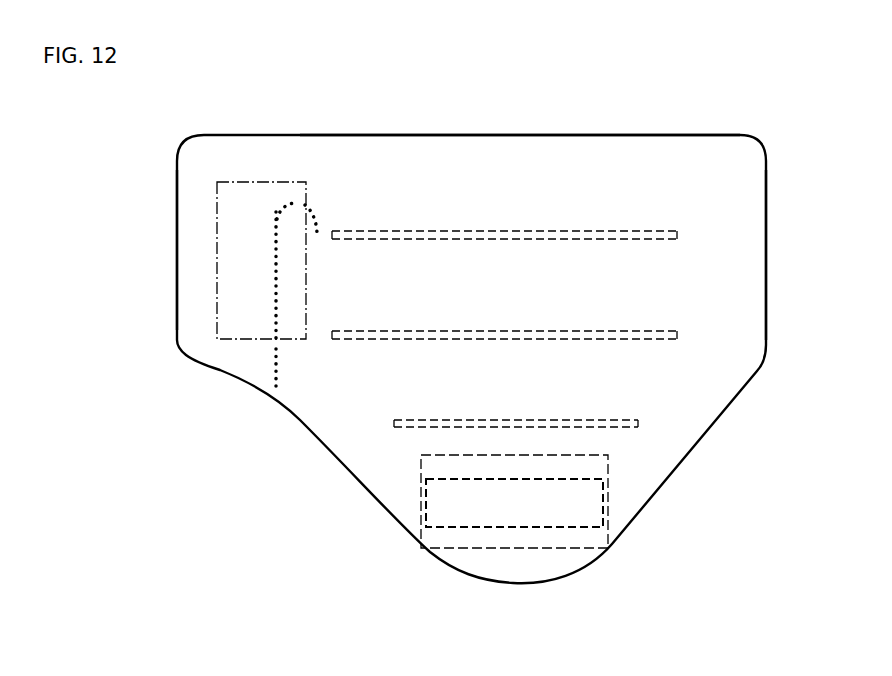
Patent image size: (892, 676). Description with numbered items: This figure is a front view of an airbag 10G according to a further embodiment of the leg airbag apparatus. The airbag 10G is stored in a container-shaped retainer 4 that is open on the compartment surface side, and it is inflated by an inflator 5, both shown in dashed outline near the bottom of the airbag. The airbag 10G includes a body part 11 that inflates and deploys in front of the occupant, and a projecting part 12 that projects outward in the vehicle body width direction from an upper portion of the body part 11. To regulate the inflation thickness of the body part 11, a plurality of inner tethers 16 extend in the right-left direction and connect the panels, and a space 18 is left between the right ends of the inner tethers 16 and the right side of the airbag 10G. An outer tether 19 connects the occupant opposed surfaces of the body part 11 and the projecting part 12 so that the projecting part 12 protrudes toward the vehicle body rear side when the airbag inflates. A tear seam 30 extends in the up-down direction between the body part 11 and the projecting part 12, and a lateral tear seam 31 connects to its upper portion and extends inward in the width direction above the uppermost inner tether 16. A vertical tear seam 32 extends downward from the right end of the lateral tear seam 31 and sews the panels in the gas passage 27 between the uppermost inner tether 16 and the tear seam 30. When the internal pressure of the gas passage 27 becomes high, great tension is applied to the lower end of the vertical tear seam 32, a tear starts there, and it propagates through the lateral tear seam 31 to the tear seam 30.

The airbag 10G is at (480, 132).
The body part 11 is at (583, 157).
The projecting part 12 is at (192, 202).
The space 18 is at (737, 306).
The outer tether 19 is at (237, 336).
The tear seam 30 is at (272, 283).
The lateral tear seam 31 is at (296, 200).
The vertical tear seam 32 is at (317, 227).
The gas passage 27 is at (297, 370).
The inner tether 16 is at (530, 230).
The retainer 4 is at (553, 548).
The inflator 5 is at (455, 528).